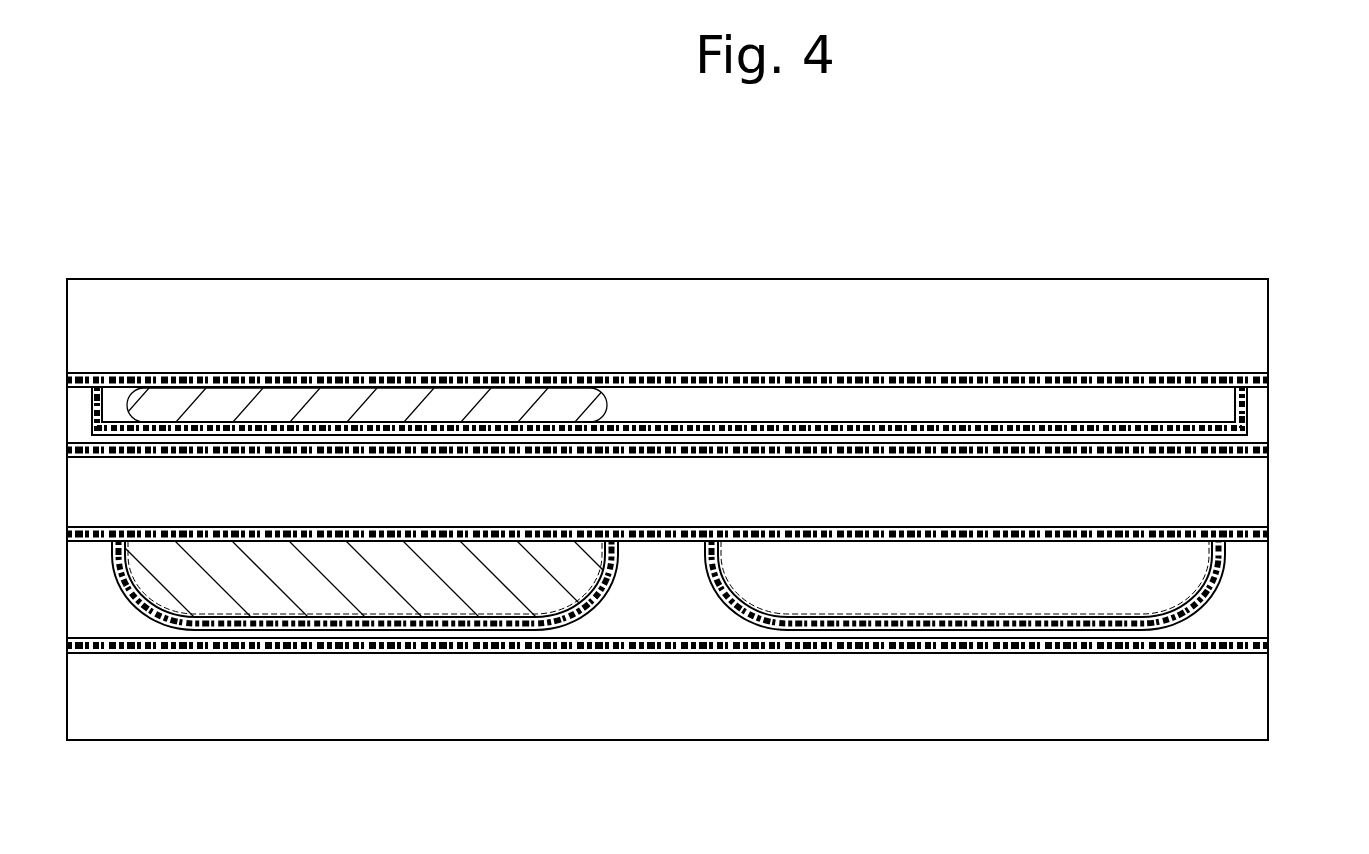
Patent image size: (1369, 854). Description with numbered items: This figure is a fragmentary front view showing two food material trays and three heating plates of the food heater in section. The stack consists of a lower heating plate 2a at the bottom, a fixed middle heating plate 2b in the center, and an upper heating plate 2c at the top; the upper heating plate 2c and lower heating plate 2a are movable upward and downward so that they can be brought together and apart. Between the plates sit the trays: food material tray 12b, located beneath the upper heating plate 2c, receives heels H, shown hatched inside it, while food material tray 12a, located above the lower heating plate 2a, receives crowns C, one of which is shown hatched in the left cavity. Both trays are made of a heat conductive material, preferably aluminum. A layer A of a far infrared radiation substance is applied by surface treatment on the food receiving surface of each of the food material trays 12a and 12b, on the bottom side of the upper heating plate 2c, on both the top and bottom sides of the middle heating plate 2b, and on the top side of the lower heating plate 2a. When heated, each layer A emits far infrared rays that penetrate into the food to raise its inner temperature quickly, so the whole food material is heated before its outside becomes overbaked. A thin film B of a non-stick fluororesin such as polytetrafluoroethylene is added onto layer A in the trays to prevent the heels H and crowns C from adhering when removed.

The lower heating plate 2a is at (1250, 681).
The middle heating plate 2b is at (1250, 489).
The upper heating plate 2c is at (1243, 322).
The food material tray 12a is at (1250, 585).
The food material tray 12b is at (1255, 407).
The layer of far infrared radiation substance A is at (70, 380).
The thin film of non-stick substance B is at (110, 440).
The heels H is at (297, 407).
The crowns C is at (327, 590).